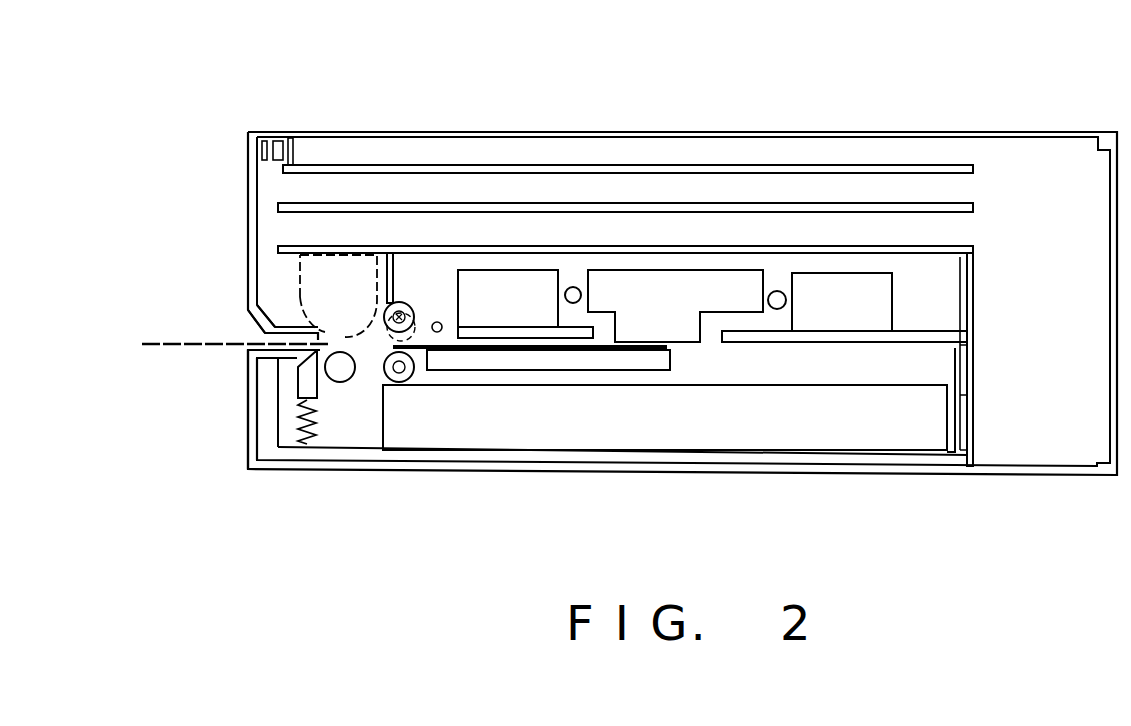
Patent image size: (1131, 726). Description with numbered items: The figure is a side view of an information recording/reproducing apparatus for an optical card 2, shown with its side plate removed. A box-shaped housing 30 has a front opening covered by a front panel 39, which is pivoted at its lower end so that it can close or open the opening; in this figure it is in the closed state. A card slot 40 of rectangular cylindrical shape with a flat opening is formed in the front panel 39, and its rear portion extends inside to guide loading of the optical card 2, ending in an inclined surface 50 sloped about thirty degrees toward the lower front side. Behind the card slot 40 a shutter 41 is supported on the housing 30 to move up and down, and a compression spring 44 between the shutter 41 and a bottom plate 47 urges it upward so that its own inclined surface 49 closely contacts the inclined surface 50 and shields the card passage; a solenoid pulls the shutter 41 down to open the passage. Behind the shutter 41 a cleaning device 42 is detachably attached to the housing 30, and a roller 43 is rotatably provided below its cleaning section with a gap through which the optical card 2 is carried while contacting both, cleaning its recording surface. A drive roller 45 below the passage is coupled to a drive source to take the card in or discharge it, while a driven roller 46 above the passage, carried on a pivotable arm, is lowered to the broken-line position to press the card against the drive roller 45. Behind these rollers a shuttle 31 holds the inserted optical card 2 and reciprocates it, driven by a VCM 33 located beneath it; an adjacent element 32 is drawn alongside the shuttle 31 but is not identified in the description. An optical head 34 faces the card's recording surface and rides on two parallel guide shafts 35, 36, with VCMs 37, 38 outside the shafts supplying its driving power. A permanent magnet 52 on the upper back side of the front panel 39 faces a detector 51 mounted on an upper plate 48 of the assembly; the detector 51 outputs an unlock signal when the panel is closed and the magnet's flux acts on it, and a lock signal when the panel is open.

The optical card 2 is at (170, 347).
The housing 30 is at (932, 133).
The shuttle 31 is at (545, 370).
The thermal head 32 is at (585, 349).
The VCM (Voice Coil Motor) 33 is at (917, 442).
The optical head 34 is at (671, 272).
The guide shaft 35 is at (573, 287).
The guide shaft 36 is at (776, 291).
The VCM 37 is at (512, 270).
The VCM 38 is at (853, 275).
The front panel 39 is at (248, 445).
The card slot 40 is at (264, 337).
The shutter 41 is at (300, 383).
The cleaning device 42 is at (302, 265).
The roller 43 is at (338, 382).
The compression spring 44 is at (317, 432).
The drive roller 45 is at (406, 380).
The driven roller 46 is at (397, 302).
The bottom plate 47 is at (297, 457).
The upper plate 48 is at (316, 160).
The inclined surface 49 is at (293, 370).
The inclined surface 50 is at (320, 328).
The detector 51 is at (278, 141).
The permanent magnet 52 is at (262, 152).